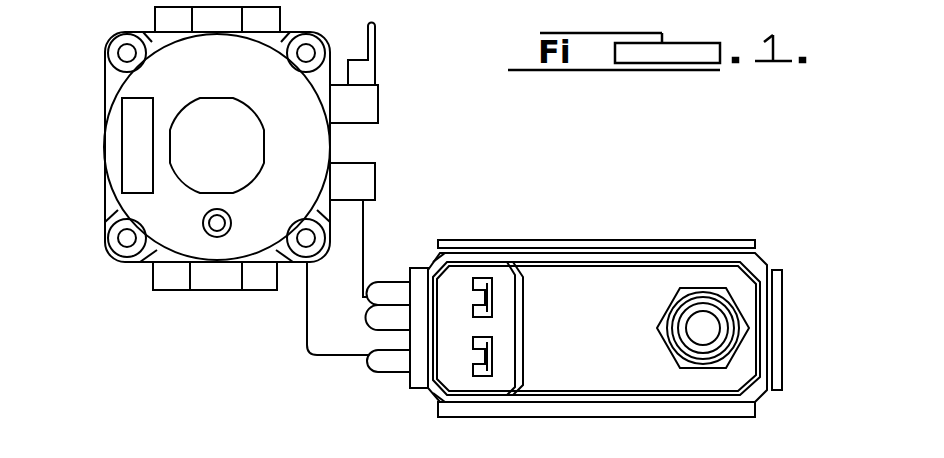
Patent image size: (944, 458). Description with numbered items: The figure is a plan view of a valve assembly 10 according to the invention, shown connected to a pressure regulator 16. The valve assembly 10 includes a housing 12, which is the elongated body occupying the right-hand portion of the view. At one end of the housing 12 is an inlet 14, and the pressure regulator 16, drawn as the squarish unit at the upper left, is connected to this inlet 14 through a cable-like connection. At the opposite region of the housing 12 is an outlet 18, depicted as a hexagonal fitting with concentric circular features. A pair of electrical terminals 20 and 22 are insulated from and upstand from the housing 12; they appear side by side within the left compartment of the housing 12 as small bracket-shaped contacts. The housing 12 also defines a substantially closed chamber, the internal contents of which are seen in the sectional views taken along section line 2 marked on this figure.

The valve assembly 10 is at (629, 219).
The housing 12 is at (573, 410).
The inlet 14 is at (383, 365).
The pressure regulator 16 is at (103, 168).
The outlet 18 is at (737, 300).
The electrical terminal 20 is at (495, 288).
The electrical terminal 22 is at (496, 358).
The section line 2- 2 is at (400, 323).